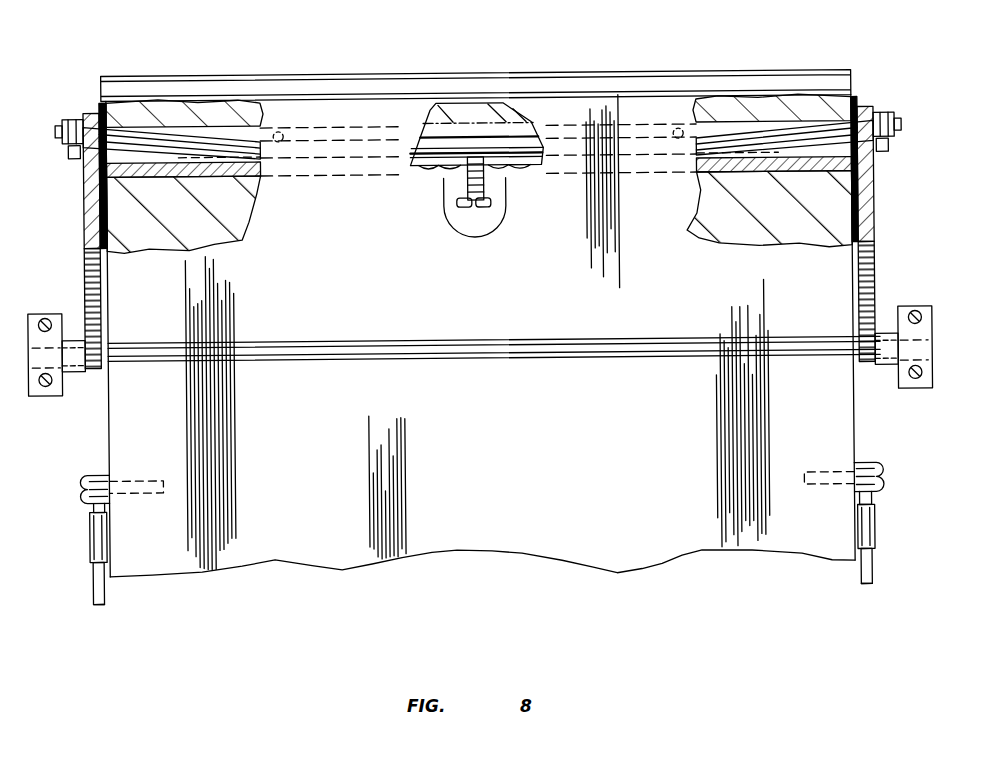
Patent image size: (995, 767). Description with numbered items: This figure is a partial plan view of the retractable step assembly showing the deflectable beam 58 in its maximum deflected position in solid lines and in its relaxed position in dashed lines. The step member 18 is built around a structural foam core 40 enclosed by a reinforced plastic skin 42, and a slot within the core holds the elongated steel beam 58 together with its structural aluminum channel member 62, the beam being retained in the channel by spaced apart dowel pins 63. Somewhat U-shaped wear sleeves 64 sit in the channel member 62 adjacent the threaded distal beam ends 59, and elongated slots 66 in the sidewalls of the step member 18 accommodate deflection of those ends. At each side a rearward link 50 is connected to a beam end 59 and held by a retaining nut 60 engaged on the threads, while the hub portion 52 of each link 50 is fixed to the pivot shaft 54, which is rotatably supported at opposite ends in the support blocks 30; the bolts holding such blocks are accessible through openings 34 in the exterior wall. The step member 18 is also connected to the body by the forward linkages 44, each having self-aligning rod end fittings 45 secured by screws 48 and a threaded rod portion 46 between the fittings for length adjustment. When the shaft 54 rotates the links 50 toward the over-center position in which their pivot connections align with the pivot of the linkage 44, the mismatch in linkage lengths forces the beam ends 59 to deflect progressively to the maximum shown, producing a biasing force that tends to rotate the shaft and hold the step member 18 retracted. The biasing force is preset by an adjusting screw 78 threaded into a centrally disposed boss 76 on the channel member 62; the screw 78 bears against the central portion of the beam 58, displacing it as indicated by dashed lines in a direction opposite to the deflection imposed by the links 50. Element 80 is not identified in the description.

The step member 18 is at (105, 439).
The support block 30 is at (30, 314).
The opening 34 is at (52, 320).
The structural foam core 40 is at (232, 220).
The reinforced plastic skin 42 is at (100, 222).
The linkage 44 is at (104, 586).
The rod end fitting 45 is at (105, 530).
The threaded rod portion 46 is at (90, 592).
The screw 48 is at (134, 480).
The link 50 is at (886, 262).
The hub portion 52 is at (78, 372).
The pivot shaft 54 is at (778, 340).
The deflectable beam 58 is at (512, 120).
The beam end 59 is at (66, 126).
The retaining nut 60 is at (76, 118).
The channel member 62 is at (250, 172).
The dowel pin 63 is at (283, 130).
The wear sleeve 64 is at (150, 235).
The slot 66 is at (106, 232).
The boss 76 is at (446, 190).
The adjusting screw 78 is at (500, 188).
The top rail 80 is at (445, 73).